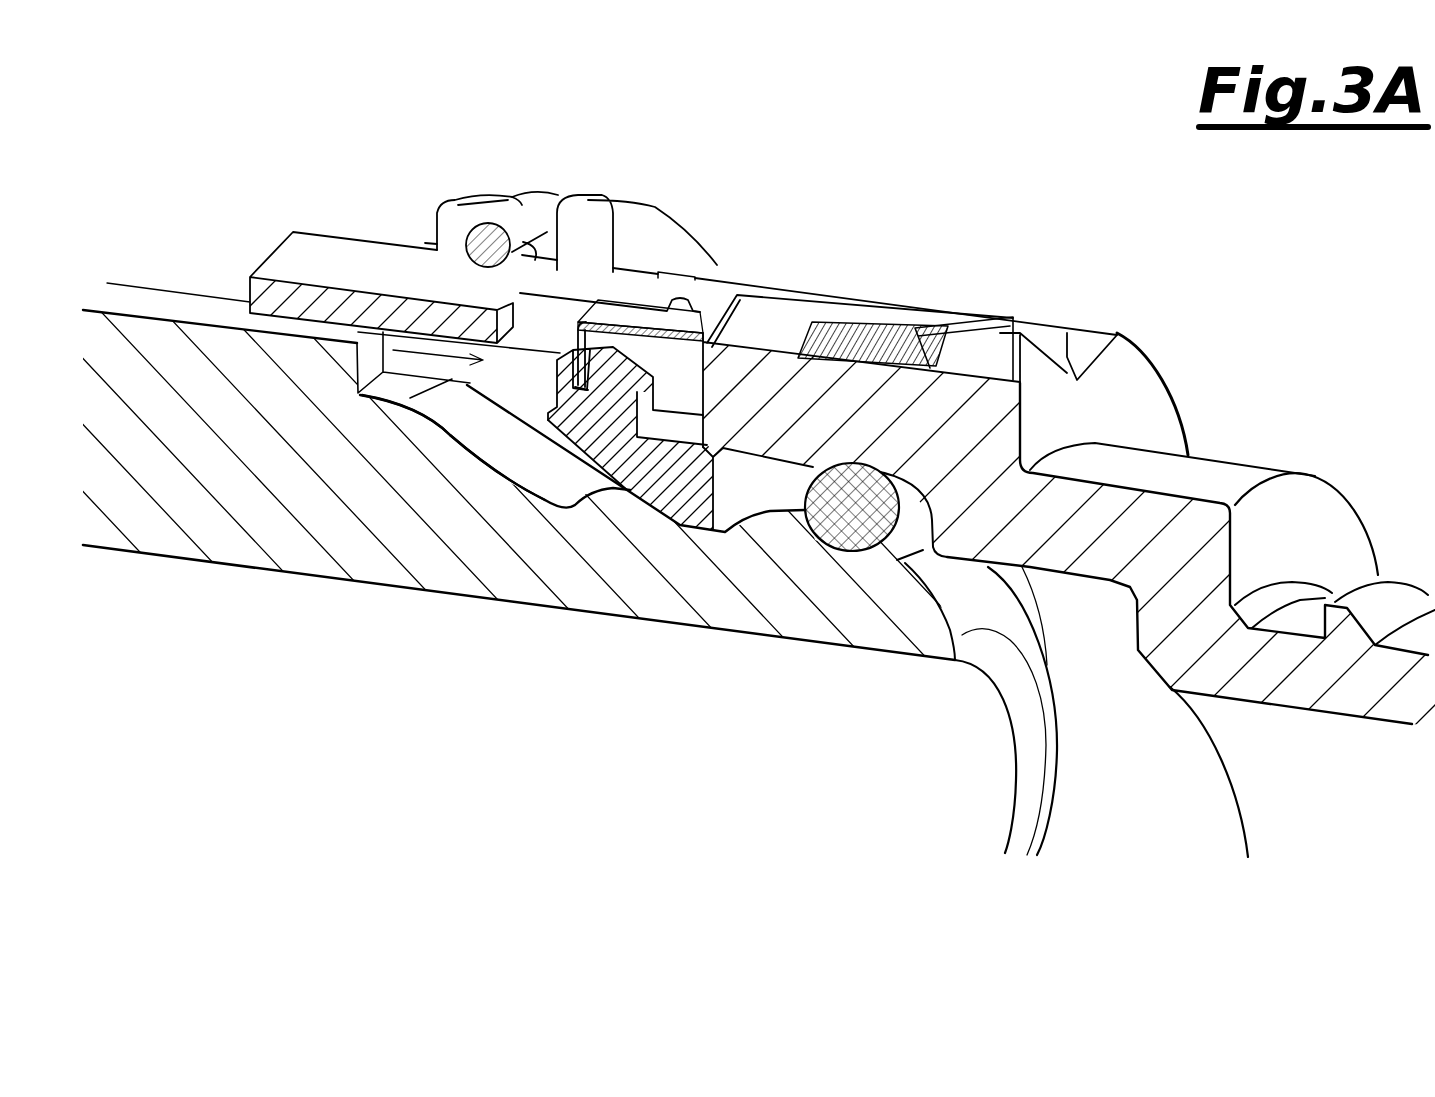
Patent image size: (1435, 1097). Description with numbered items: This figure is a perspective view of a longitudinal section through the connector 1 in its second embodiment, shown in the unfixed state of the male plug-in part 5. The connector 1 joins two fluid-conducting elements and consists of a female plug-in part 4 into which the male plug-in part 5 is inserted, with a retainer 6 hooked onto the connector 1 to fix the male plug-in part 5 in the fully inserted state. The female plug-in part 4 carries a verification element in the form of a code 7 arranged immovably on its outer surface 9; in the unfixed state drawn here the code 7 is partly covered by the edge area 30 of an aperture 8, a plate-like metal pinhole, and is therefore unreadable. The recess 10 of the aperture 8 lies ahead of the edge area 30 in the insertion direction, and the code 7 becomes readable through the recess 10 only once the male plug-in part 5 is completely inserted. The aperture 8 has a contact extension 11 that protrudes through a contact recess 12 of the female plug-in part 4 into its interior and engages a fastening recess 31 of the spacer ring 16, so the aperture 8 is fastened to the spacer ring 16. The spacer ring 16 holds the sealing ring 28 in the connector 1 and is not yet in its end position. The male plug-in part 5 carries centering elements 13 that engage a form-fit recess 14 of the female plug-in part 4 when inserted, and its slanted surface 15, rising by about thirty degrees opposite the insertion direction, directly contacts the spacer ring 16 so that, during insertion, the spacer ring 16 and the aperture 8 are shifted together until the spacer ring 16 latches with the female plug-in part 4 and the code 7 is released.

The connector 1 is at (1082, 130).
The female plug-in part 4 is at (1152, 351).
The male plug-in part 5 is at (273, 577).
The retainer 6 is at (521, 186).
The code 7 is at (855, 320).
The aperture 8 is at (713, 282).
The outer surface 9 is at (1027, 353).
The recess 10 is at (777, 300).
The contact extension 11 is at (615, 403).
The contact recess 12 is at (516, 292).
The centering elements 13 is at (220, 340).
The form-fit recess 14 is at (405, 328).
The slanted surface 15 is at (498, 452).
The spacer ring 16 is at (683, 488).
The sealing ring 28 is at (850, 520).
The edge area 30 is at (963, 347).
The fastening recess 31 is at (583, 397).